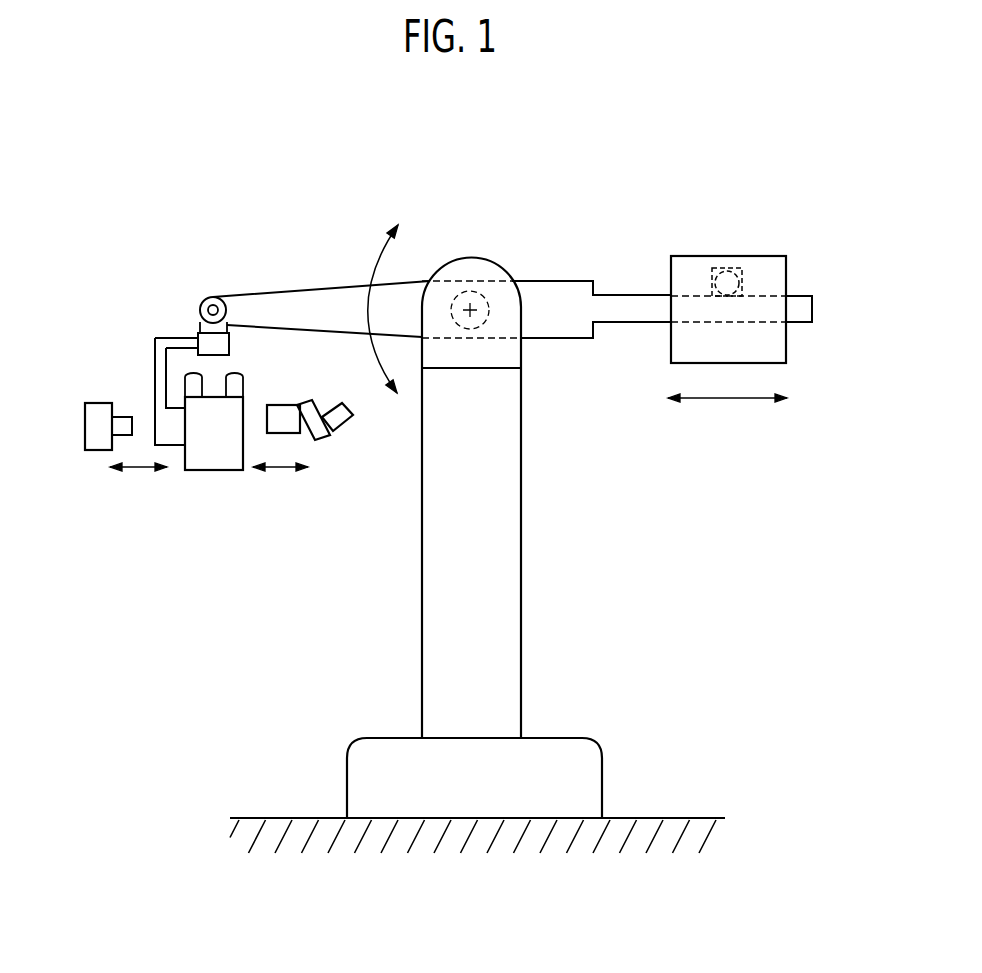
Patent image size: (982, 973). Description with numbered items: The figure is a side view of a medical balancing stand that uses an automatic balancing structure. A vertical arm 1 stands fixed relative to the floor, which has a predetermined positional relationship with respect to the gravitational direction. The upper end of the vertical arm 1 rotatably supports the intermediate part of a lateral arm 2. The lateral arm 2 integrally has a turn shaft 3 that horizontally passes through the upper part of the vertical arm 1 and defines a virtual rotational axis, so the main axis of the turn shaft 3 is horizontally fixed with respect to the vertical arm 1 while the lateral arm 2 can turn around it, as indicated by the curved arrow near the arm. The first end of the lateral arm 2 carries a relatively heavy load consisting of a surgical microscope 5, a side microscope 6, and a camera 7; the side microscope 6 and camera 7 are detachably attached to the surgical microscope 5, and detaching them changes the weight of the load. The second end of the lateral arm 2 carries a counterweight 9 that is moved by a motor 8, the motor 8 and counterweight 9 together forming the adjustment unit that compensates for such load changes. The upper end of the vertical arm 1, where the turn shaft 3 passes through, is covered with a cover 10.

The vertical arm 1 is at (523, 560).
The lateral arm 2 is at (340, 278).
The turn shaft 3 is at (490, 307).
The surgical microscope 5 is at (215, 465).
The side microscope 6 is at (327, 437).
The camera 7 is at (102, 452).
The motor 8 is at (735, 263).
The counterweight 9 is at (785, 340).
The cover 10 is at (513, 353).